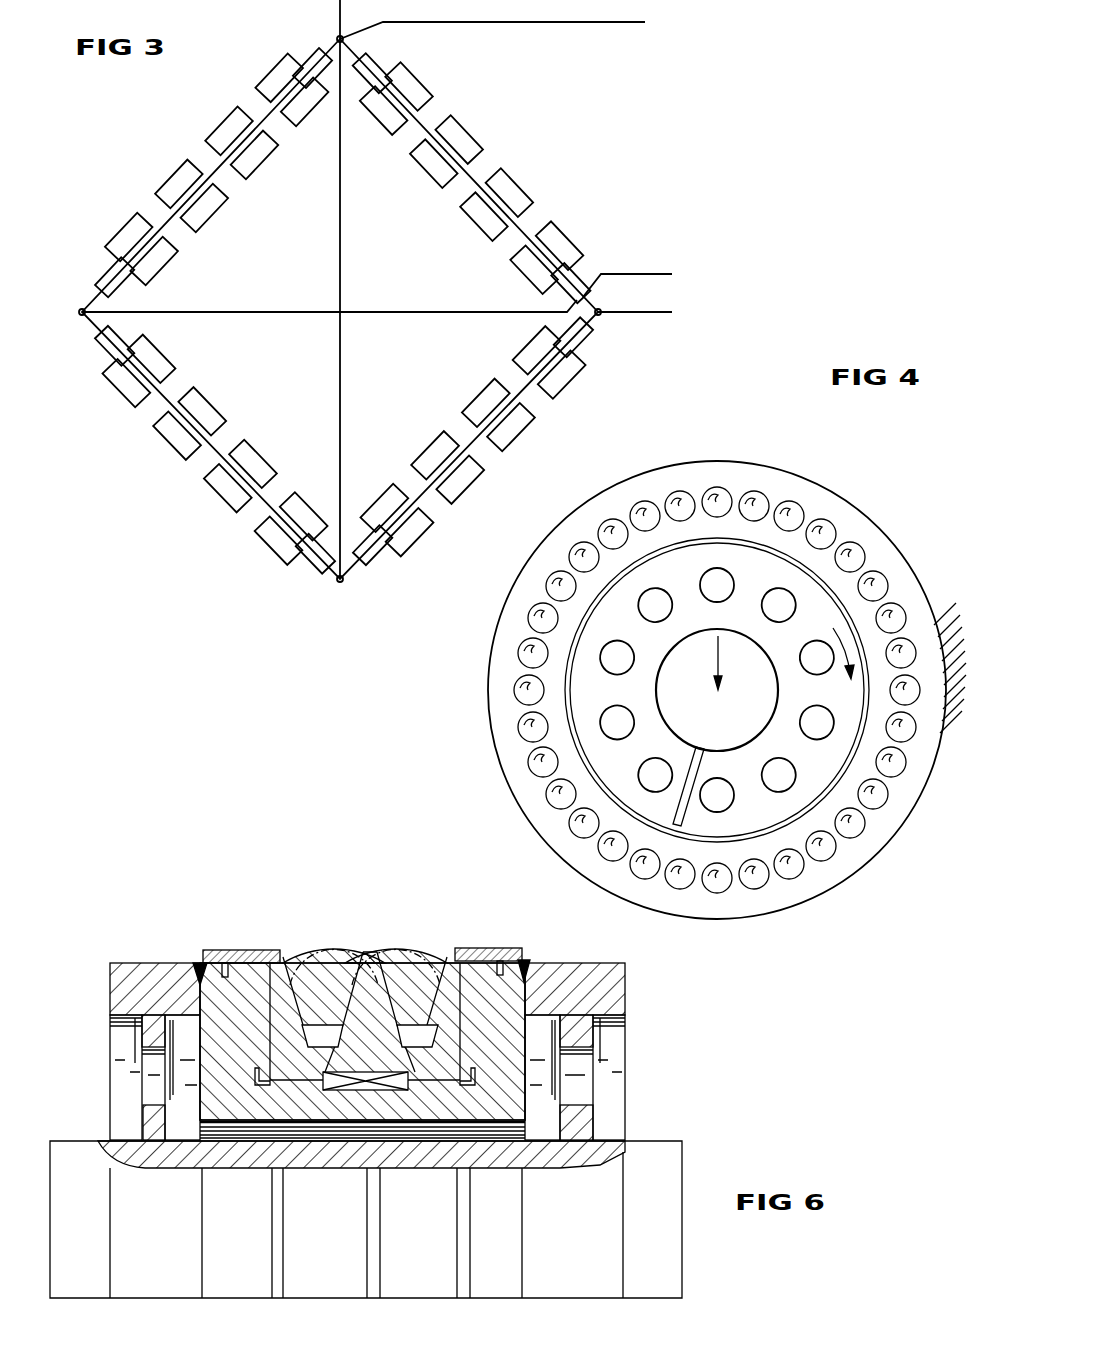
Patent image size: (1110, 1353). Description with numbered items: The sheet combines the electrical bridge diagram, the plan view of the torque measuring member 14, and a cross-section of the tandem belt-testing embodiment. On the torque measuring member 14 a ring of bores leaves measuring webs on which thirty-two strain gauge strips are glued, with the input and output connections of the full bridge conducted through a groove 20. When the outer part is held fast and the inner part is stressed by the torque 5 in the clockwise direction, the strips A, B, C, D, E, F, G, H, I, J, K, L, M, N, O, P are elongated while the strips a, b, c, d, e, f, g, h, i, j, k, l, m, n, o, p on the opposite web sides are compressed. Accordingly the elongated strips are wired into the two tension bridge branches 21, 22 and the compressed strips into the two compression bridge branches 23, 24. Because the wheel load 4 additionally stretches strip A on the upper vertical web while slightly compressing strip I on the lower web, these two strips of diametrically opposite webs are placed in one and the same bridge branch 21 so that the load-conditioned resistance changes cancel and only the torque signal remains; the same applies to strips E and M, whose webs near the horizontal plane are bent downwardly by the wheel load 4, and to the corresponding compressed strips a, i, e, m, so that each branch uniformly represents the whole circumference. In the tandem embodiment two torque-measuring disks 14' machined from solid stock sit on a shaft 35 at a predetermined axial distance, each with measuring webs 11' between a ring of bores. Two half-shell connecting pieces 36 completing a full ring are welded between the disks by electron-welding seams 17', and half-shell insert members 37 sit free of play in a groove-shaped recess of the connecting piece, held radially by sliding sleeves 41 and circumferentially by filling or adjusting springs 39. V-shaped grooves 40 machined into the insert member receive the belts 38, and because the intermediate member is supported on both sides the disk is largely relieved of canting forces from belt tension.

In FIG. 4, the wheel load 4 is at (718, 645).
In FIG. 4, the torque 5 is at (833, 628).
In FIG. 6, the measuring webs 11' is at (367, 1077).
In FIG. 4, the torque measuring member 14 is at (712, 690).
In FIG. 6, the torque measuring member 14 is at (596, 989).
In FIG. 6, the torque-measuring disks 14' is at (155, 960).
In FIG. 6, the welding seams 17' is at (372, 947).
In FIG. 4, the groove 20 is at (697, 747).
In FIG. 3, the tension bridge branch 21 is at (102, 278).
In FIG. 3, the tension bridge branch 22 is at (375, 555).
In FIG. 3, the compression bridge branch 23 is at (108, 350).
In FIG. 3, the compression bridge branch 24 is at (580, 278).
In FIG. 6, the shaft 35 is at (645, 1160).
In FIG. 6, the connecting pieces 36 is at (345, 1122).
In FIG. 6, the insert members 37 is at (278, 968).
In FIG. 6, the conical studs 38 is at (418, 950).
In FIG. 6, the adjusting springs 39 is at (395, 1090).
In FIG. 6, the V-shaped grooves 40 is at (312, 1042).
In FIG. 6, the sliding sleeves 41 is at (240, 950).
In FIG. 3, the strain gauge strip A is at (272, 70).
In FIG. 4, the strain gauge strip A is at (716, 494).
In FIG. 3, the strain gauge strip B is at (416, 538).
In FIG. 4, the strain gauge strip B is at (792, 509).
In FIG. 3, the strain gauge strip C is at (220, 122).
In FIG. 4, the strain gauge strip C is at (856, 551).
In FIG. 3, the strain gauge strip D is at (466, 488).
In FIG. 4, the strain gauge strip D is at (899, 614).
In FIG. 3, the strain gauge strip E is at (170, 176).
In FIG. 4, the strain gauge strip E is at (914, 689).
In FIG. 3, the strain gauge strip F is at (516, 435).
In FIG. 4, the strain gauge strip F is at (898, 771).
In FIG. 3, the strain gauge strip G is at (120, 228).
In FIG. 4, the strain gauge strip G is at (856, 833).
In FIG. 3, the strain gauge strip H is at (566, 384).
In FIG. 4, the strain gauge strip H is at (792, 875).
In FIG. 3, the strain gauge strip I is at (164, 266).
In FIG. 4, the strain gauge strip I is at (717, 890).
In FIG. 3, the strain gauge strip J is at (528, 346).
In FIG. 4, the strain gauge strip J is at (637, 872).
In FIG. 3, the strain gauge strip K is at (212, 214).
In FIG. 4, the strain gauge strip K is at (577, 832).
In FIG. 3, the strain gauge strip L is at (482, 396).
In FIG. 4, the strain gauge strip L is at (534, 766).
In FIG. 3, the strain gauge strip M is at (262, 160).
In FIG. 4, the strain gauge strip M is at (519, 691).
In FIG. 3, the strain gauge strip N is at (430, 448).
In FIG. 4, the strain gauge strip N is at (534, 617).
In FIG. 3, the strain gauge strip O is at (304, 110).
In FIG. 4, the strain gauge strip O is at (579, 551).
In FIG. 3, the strain gauge strip P is at (380, 500).
In FIG. 4, the strain gauge strip P is at (641, 509).
In FIG. 3, the strain gauge strip a is at (270, 544).
In FIG. 4, the strain gauge strip a is at (756, 498).
In FIG. 3, the strain gauge strip b is at (416, 78).
In FIG. 4, the strain gauge strip b is at (827, 527).
In FIG. 3, the strain gauge strip c is at (220, 494).
In FIG. 4, the strain gauge strip c is at (880, 580).
In FIG. 3, the strain gauge strip d is at (466, 132).
In FIG. 4, the strain gauge strip d is at (909, 648).
In FIG. 3, the strain gauge strip e is at (170, 442).
In FIG. 4, the strain gauge strip e is at (909, 735).
In FIG. 3, the strain gauge strip f is at (516, 186).
In FIG. 4, the strain gauge strip f is at (880, 804).
In FIG. 3, the strain gauge strip g is at (120, 392).
In FIG. 4, the strain gauge strip g is at (825, 858).
In FIG. 3, the strain gauge strip h is at (566, 240).
In FIG. 4, the strain gauge strip h is at (755, 886).
In FIG. 3, the strain gauge strip i is at (158, 358).
In FIG. 4, the strain gauge strip i is at (675, 885).
In FIG. 3, the strain gauge strip j is at (528, 278).
In FIG. 4, the strain gauge strip j is at (604, 854).
In FIG. 3, the strain gauge strip k is at (208, 404).
In FIG. 4, the strain gauge strip k is at (551, 800).
In FIG. 3, the strain gauge strip l is at (478, 224).
In FIG. 4, the strain gauge strip l is at (523, 730).
In FIG. 3, the strain gauge strip m is at (258, 458).
In FIG. 4, the strain gauge strip m is at (523, 653).
In FIG. 3, the strain gauge strip n is at (428, 172).
In FIG. 4, the strain gauge strip n is at (552, 582).
In FIG. 3, the strain gauge strip o is at (300, 510).
In FIG. 4, the strain gauge strip o is at (608, 527).
In FIG. 3, the strain gauge strip p is at (378, 120).
In FIG. 4, the strain gauge strip p is at (678, 498).